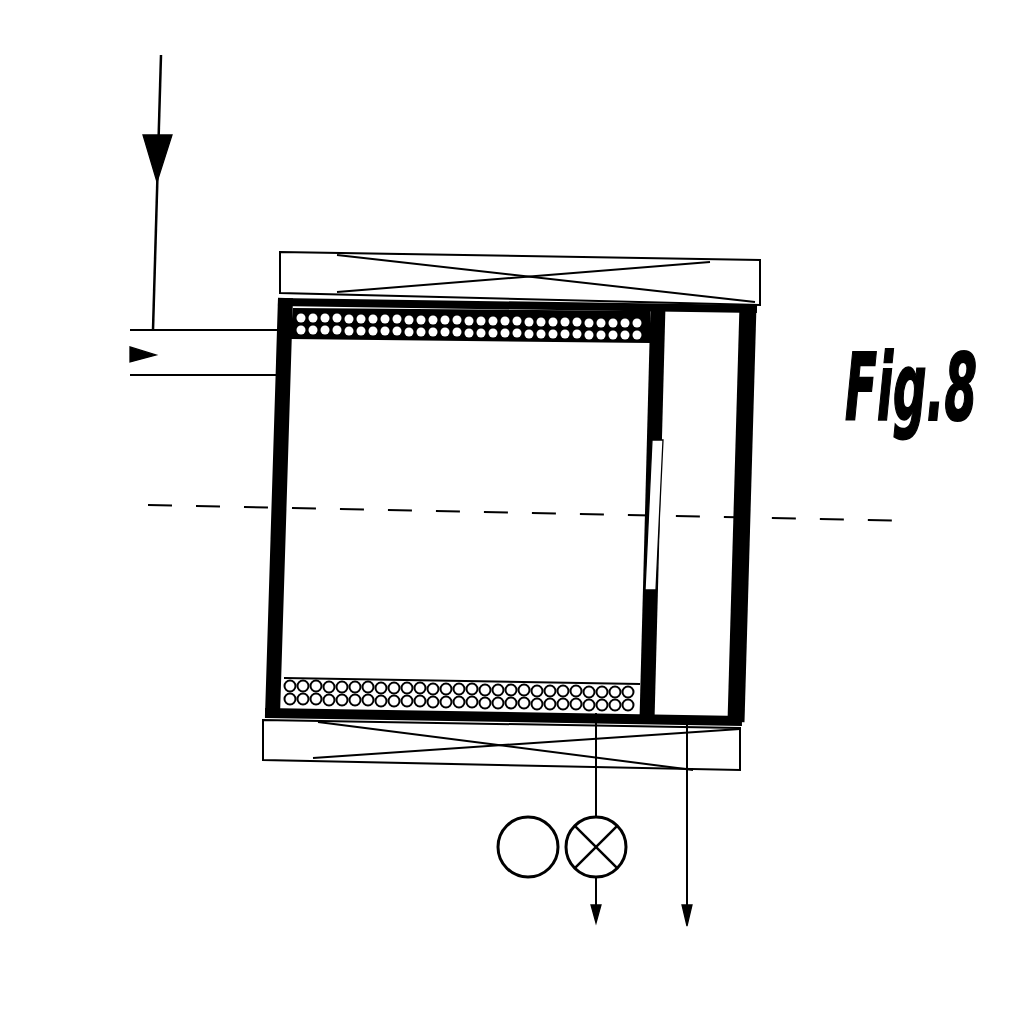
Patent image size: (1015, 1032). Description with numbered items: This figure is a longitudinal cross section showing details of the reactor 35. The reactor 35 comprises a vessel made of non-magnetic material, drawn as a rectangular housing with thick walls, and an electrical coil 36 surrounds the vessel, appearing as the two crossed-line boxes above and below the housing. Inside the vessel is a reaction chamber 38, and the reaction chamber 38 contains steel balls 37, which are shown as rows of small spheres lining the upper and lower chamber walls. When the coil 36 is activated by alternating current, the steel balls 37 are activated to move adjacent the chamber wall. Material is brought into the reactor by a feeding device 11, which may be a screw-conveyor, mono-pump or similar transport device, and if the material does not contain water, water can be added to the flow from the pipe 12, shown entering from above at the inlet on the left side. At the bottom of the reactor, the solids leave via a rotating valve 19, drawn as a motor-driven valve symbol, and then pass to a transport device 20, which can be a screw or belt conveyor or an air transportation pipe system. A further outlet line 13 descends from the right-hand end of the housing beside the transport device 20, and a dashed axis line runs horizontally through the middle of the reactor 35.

The feeding device 11 is at (228, 377).
The pipe 12 is at (153, 250).
The outlet line 13 is at (690, 808).
The rotating valve 19 is at (607, 818).
The transport device 20 is at (598, 790).
The reactor 35 is at (757, 330).
The electrical coil 36 is at (597, 258).
The steel balls 37 is at (480, 338).
The reaction chamber 38 is at (507, 466).